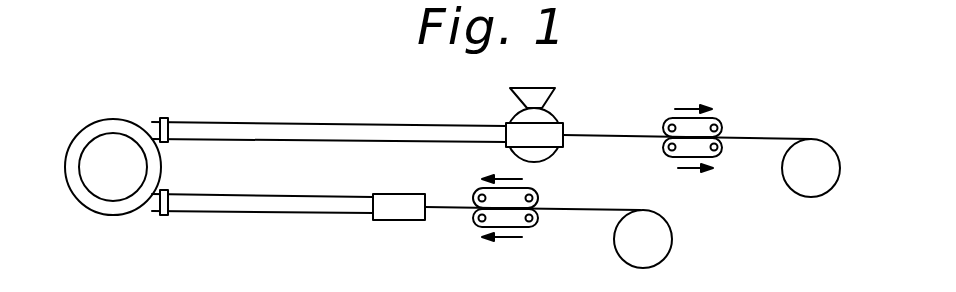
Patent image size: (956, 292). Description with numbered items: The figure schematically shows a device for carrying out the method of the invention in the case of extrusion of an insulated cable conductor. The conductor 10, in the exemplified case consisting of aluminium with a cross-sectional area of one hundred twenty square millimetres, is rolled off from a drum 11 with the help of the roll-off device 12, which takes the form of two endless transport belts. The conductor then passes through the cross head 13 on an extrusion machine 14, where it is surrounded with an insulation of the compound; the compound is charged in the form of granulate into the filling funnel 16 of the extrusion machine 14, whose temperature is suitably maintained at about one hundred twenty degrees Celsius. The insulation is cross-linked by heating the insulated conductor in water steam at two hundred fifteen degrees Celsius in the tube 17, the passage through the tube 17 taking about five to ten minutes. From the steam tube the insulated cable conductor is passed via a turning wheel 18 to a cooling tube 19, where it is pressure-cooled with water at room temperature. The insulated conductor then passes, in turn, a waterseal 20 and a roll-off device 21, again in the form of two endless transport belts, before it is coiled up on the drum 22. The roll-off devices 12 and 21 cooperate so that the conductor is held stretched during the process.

The conductor 10 is at (770, 137).
The drum 11 is at (817, 185).
The roll-off device 12 is at (722, 150).
The cross head 13 is at (553, 138).
The extrusion machine 14 is at (513, 118).
The filling funnel 16 is at (547, 88).
The tube 17 is at (323, 123).
The turning wheel 18 is at (113, 216).
The cooling tube 19 is at (280, 215).
The waterseal 20 is at (397, 220).
The roll-off device 21 is at (537, 227).
The drum 22 is at (672, 240).